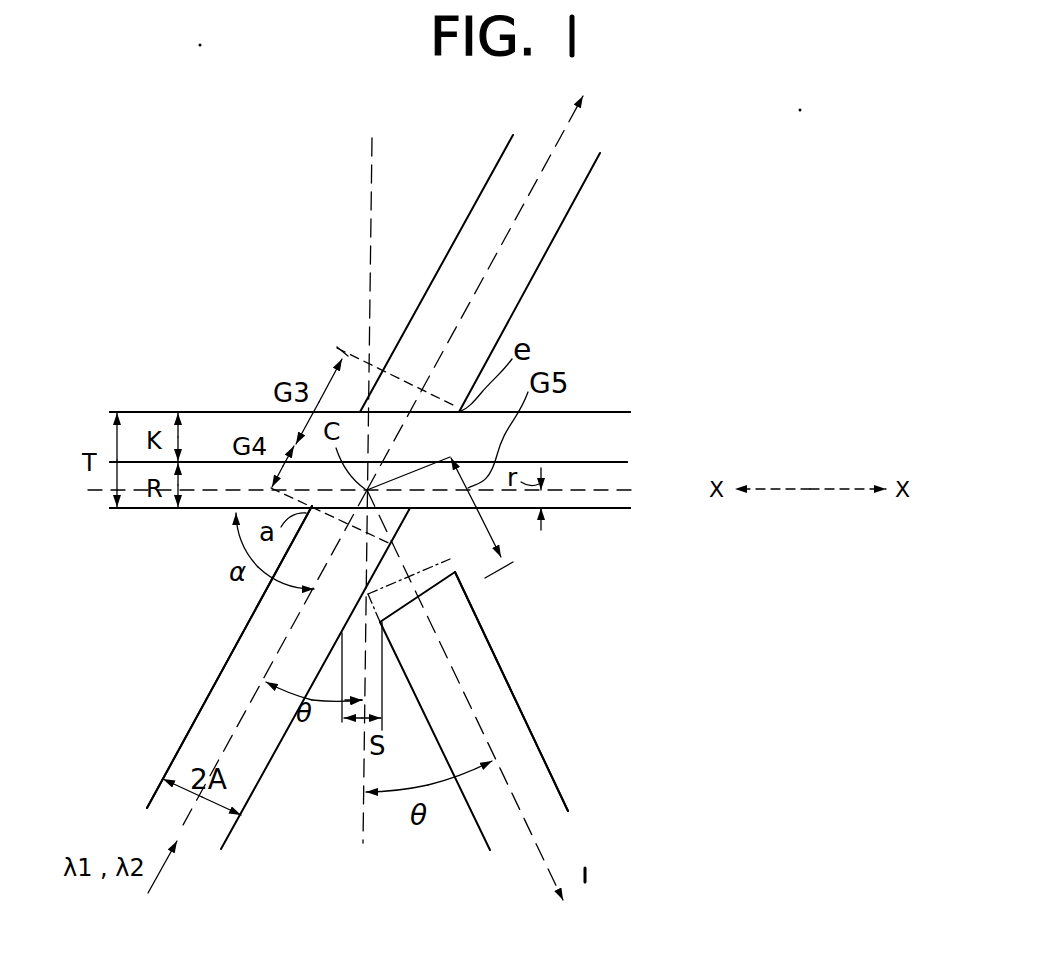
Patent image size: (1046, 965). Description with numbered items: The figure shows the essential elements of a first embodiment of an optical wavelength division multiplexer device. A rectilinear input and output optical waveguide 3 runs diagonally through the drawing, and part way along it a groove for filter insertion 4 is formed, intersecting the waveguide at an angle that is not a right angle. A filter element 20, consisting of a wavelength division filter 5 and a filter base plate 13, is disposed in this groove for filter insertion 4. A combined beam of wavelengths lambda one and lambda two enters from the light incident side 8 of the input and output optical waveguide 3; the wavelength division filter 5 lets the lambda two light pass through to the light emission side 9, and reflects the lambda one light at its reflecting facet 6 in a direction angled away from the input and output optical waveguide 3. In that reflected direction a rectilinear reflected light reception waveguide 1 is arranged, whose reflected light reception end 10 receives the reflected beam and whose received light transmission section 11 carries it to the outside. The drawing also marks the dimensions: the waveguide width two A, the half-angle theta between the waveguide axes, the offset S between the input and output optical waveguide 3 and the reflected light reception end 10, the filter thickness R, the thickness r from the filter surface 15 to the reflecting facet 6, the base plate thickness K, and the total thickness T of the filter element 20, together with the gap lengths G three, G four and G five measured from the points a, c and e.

The reflected light reception waveguide 1 is at (510, 729).
The input and output optical waveguide 3 is at (262, 635).
The groove for filter insertion 4 is at (587, 420).
The wavelength division filter 5 is at (558, 509).
The reflecting facet 6 is at (595, 497).
The light incident side 8 is at (167, 810).
The light emission side 9 is at (565, 192).
The reflected light reception end 10 is at (496, 611).
The received light transmission section 11 is at (548, 823).
The filter base plate 13 is at (608, 440).
The filter surface 15 is at (578, 512).
The filter element 20 is at (214, 405).